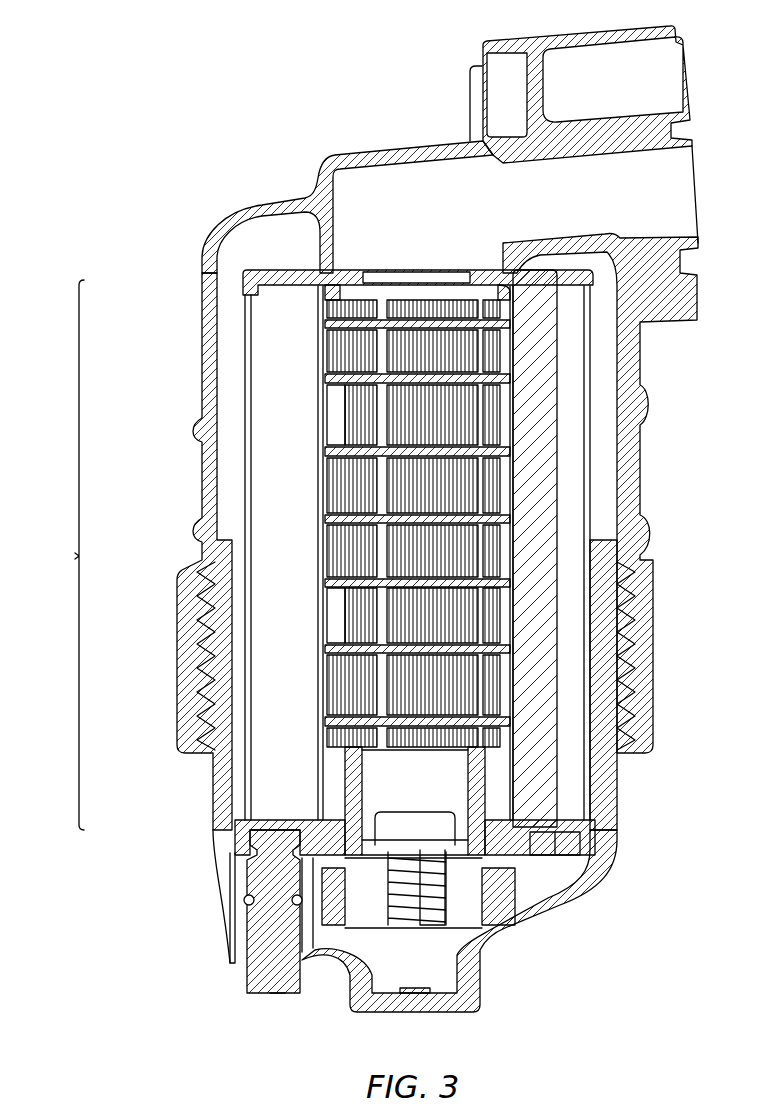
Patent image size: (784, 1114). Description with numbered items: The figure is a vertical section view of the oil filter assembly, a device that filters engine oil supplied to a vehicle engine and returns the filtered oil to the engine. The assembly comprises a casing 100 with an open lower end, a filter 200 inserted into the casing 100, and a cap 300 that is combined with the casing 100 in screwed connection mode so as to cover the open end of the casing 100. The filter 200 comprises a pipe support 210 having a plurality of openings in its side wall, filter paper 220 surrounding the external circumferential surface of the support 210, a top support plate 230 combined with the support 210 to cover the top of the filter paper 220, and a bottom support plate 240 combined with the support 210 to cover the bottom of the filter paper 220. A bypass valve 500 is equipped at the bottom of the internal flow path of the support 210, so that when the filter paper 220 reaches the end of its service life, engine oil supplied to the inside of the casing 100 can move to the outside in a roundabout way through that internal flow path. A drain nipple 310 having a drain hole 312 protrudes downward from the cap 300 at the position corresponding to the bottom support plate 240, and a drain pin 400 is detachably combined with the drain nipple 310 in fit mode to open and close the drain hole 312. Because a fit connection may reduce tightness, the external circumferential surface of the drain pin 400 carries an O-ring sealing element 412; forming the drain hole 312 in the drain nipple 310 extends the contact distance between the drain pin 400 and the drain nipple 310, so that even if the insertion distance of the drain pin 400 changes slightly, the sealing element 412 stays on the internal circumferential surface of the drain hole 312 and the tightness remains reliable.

The casing 100 is at (623, 448).
The filter 200 is at (278, 555).
The pipe support 210 is at (322, 632).
The filter paper 220 is at (290, 452).
The top support plate 230 is at (245, 274).
The bottom support plate 240 is at (245, 822).
The cap 300 is at (610, 797).
The drain nipple 310 is at (237, 933).
The drain hole 312 is at (277, 990).
The drain pin 400 is at (256, 975).
The O-ring sealing element 412 is at (240, 898).
The bypass valve 500 is at (560, 835).